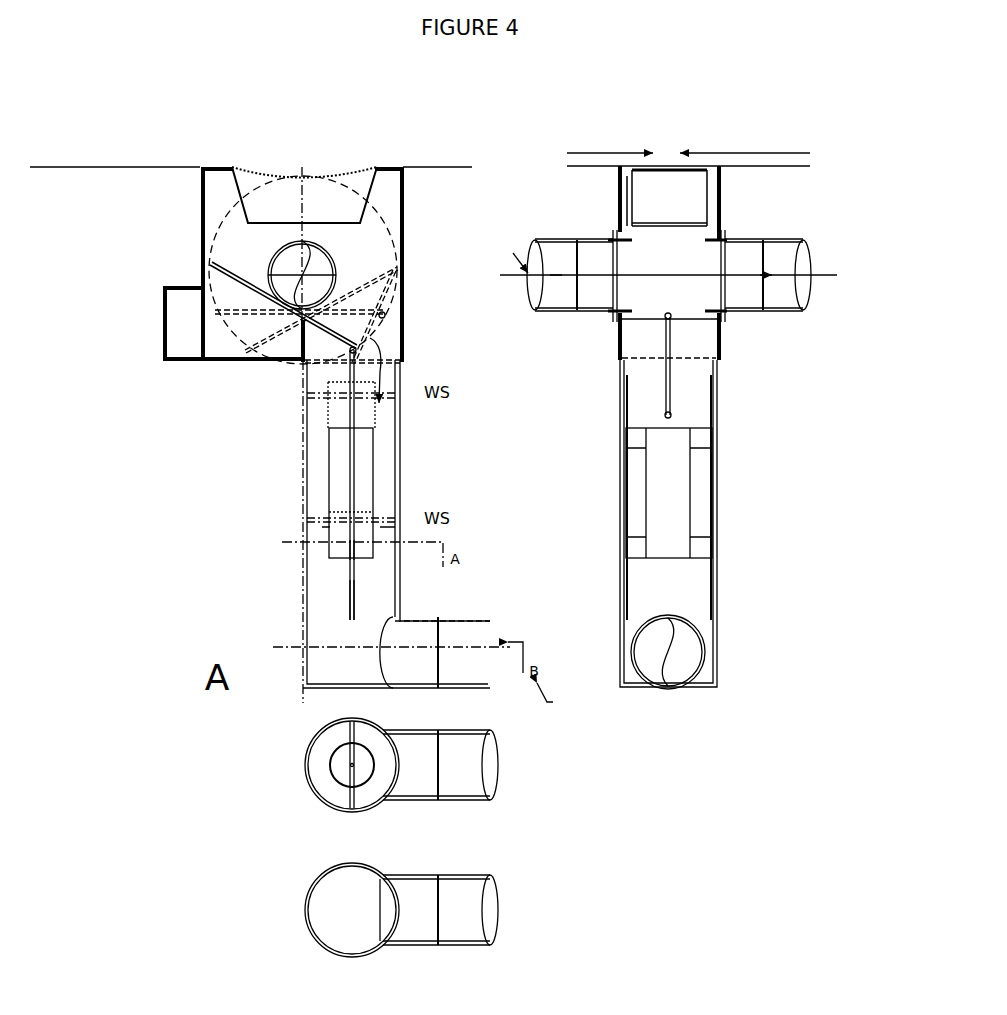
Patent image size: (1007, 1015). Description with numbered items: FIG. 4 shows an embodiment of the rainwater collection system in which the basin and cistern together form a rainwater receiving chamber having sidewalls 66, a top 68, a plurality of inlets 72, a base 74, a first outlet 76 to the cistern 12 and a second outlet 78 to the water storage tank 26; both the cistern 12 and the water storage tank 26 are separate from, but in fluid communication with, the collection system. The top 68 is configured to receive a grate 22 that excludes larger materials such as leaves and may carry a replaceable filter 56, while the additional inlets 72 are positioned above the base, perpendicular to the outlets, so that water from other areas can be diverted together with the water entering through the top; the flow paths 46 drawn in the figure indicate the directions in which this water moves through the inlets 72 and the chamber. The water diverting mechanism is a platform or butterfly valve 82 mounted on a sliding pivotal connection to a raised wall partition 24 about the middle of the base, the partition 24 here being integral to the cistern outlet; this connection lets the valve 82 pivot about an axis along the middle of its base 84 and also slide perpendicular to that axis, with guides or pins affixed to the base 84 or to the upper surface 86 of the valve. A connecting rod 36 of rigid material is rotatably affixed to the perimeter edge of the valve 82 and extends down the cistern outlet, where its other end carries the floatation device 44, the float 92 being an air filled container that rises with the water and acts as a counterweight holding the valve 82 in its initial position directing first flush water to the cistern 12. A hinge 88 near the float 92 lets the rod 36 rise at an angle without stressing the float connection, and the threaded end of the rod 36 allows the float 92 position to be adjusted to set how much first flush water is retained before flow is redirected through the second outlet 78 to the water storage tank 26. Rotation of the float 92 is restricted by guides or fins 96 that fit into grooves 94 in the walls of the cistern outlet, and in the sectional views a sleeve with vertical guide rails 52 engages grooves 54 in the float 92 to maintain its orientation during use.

The cistern 12 is at (543, 802).
The grate 22 is at (320, 167).
The raised wall partition 24 is at (240, 367).
The water storage tank 26 is at (169, 323).
The connecting rod 36 is at (348, 423).
The floatation device 44 is at (660, 490).
The flow path 46 is at (300, 167).
The vertical guide rails 52 is at (730, 425).
The grooves 54 is at (367, 475).
The filter 56 is at (257, 222).
The sidewalls 66 is at (407, 212).
The top 68 is at (388, 167).
The inlets 72 is at (635, 263).
The base 74 is at (300, 336).
The first outlet 76 is at (493, 907).
The second outlet 78 is at (255, 325).
The platform or butterfly valve 82 is at (212, 237).
The base of the platform or butterfly valve 84 is at (372, 282).
The upper surface of the platform or butterfly valve 86 is at (340, 332).
The hinge 88 is at (303, 402).
The float 92 is at (444, 493).
The grooves 94 is at (348, 598).
The guides or fins 96 is at (348, 553).